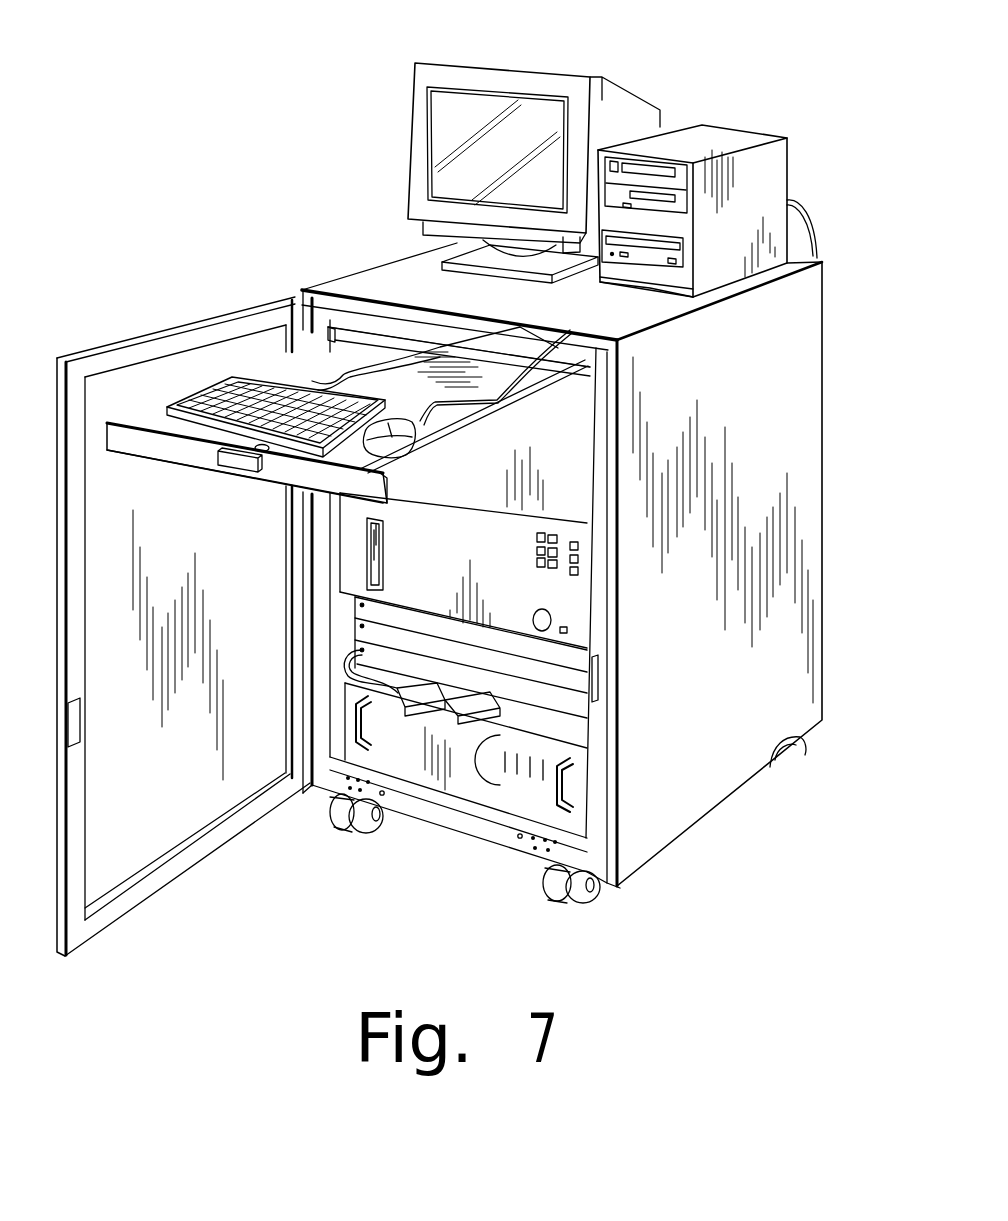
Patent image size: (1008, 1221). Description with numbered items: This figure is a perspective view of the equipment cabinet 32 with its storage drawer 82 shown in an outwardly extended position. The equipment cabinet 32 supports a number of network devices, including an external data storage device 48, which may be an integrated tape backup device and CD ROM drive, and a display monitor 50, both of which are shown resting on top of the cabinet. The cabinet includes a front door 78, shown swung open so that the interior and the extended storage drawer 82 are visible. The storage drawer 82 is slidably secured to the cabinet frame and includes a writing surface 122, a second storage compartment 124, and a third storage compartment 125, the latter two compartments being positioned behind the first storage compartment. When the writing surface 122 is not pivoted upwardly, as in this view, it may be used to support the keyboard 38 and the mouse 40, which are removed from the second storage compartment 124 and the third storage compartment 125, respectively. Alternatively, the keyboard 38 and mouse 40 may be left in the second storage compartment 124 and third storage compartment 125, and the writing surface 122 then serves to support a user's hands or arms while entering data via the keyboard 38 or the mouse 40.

The equipment cabinet 32 is at (845, 553).
The keyboard 38 is at (243, 400).
The mouse 40 is at (383, 425).
The external data storage device 48 is at (718, 135).
The display monitor 50 is at (492, 65).
The front door 78 is at (87, 934).
The storage drawer 82 is at (118, 447).
The writing surface 122 is at (342, 450).
The second storage compartment 124 is at (390, 362).
The third storage compartment 125 is at (541, 358).